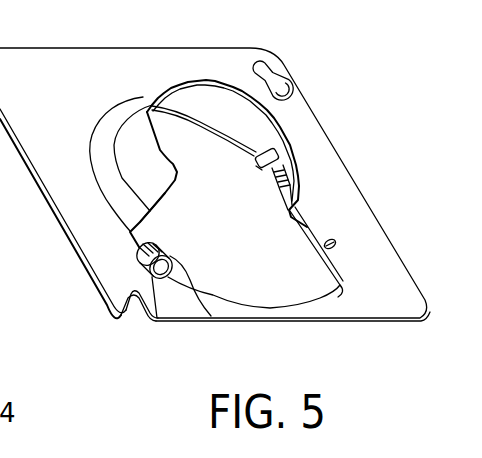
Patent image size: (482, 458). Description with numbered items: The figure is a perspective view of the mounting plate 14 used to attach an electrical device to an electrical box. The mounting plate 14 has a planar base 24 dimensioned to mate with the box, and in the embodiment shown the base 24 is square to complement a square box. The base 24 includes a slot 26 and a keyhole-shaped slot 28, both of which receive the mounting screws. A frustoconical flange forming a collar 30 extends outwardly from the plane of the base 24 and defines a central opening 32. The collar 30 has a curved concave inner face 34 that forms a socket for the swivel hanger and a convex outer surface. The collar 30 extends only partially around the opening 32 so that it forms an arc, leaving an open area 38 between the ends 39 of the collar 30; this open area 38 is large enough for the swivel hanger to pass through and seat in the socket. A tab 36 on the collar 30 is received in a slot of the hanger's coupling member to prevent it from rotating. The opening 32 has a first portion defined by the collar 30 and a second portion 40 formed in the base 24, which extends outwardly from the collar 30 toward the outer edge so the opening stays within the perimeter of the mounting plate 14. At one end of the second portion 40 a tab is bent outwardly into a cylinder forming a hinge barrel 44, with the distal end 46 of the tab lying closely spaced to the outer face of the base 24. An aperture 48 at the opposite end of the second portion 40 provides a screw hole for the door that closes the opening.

The mounting plate 14 is at (215, 218).
The planar base 24 is at (322, 160).
The slot 26 is at (135, 321).
The keyhole-shaped slot 28 is at (290, 86).
The collar 30 is at (278, 125).
The central opening 32 is at (185, 124).
The curved concave inner face 34 is at (232, 119).
The tab 36 is at (253, 163).
The open area 38 is at (247, 230).
The ends of the collar 39 is at (297, 207).
The second portion of the opening 40 is at (307, 282).
The hinge barrel 44 is at (211, 316).
The distal end of the tab 46 is at (157, 321).
The aperture 48 is at (327, 240).